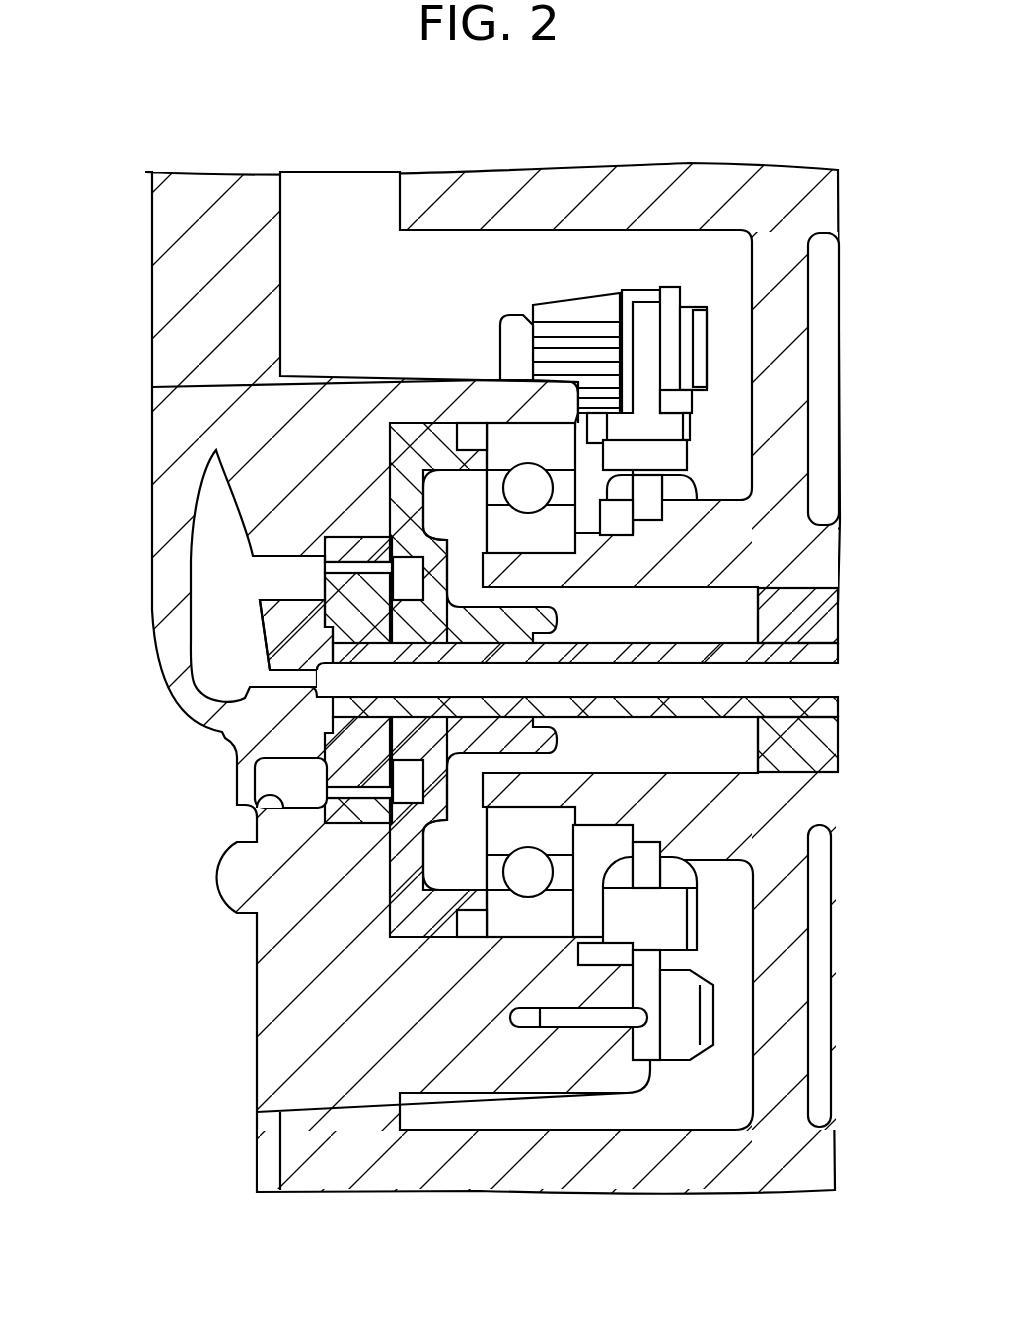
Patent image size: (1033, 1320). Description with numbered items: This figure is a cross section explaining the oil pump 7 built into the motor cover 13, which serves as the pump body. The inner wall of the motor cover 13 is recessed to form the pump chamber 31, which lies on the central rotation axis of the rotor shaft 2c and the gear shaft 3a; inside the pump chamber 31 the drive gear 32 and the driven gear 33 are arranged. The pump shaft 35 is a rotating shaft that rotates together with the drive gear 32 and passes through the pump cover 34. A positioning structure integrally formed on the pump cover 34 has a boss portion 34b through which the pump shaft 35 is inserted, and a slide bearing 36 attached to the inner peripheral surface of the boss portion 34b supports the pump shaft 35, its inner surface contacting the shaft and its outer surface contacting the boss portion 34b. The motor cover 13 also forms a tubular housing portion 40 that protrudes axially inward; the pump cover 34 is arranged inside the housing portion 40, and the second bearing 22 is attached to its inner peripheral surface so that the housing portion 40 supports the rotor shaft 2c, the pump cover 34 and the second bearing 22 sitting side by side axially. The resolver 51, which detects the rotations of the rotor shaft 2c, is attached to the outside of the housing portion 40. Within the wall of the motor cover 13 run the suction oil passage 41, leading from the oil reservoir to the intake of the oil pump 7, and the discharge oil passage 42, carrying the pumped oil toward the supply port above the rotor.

The motor cover 13 is at (150, 222).
The housing portion 40 is at (436, 370).
The second bearing 22 is at (520, 435).
The resolver 51 is at (650, 290).
The pump cover 34 is at (420, 432).
The driven gear 33 is at (368, 548).
The discharge oil passage 42 is at (205, 560).
The drive gear 32 is at (357, 612).
The oil pump 7 is at (148, 681).
The pump chamber 31 is at (272, 775).
The suction oil passage 41 is at (285, 798).
The rotor shaft 2c is at (838, 525).
The pump shaft 35 is at (672, 640).
The gear shaft 3a is at (815, 602).
The bearing 36 is at (600, 735).
The boss portion 34b is at (478, 745).